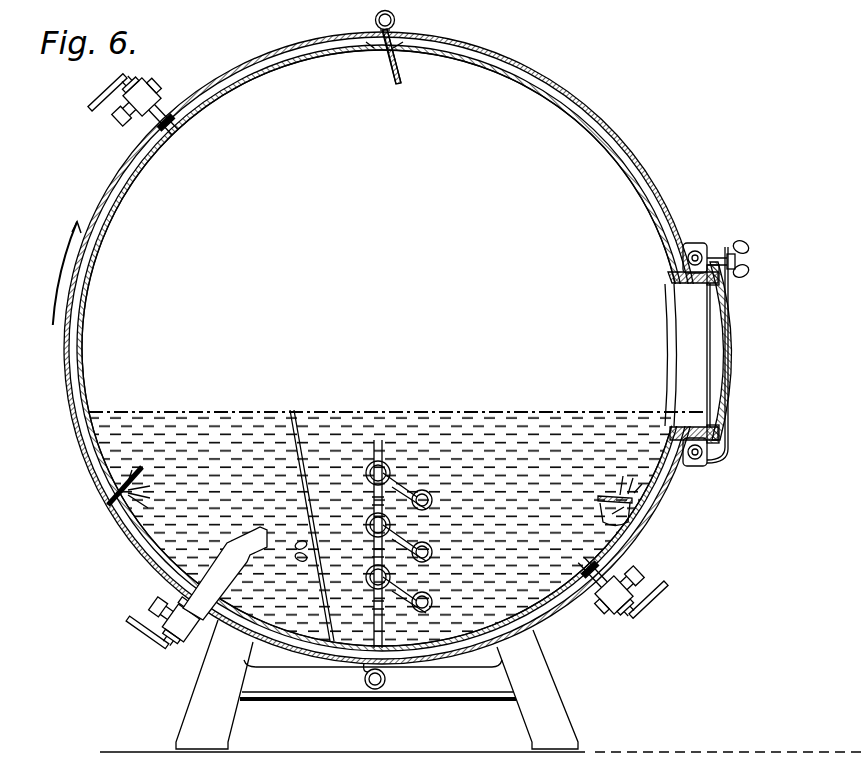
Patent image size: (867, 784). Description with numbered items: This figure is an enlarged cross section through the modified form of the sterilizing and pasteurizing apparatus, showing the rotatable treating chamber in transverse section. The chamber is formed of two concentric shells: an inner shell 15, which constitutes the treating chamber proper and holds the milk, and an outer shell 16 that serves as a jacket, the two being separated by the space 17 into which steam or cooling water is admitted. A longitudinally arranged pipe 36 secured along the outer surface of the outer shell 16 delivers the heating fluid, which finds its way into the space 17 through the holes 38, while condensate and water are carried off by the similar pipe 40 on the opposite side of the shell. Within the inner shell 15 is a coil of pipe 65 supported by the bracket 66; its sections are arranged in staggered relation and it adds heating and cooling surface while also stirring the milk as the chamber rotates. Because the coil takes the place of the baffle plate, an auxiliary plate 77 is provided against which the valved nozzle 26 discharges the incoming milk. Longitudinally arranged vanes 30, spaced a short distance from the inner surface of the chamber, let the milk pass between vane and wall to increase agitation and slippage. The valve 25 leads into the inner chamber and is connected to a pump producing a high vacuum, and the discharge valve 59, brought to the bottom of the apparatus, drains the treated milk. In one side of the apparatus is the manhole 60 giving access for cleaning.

The inner shell 15 is at (612, 160).
The outer shell 16 is at (627, 160).
The space 17 is at (633, 180).
The valve 25 is at (612, 604).
The valved nozzle 26 is at (187, 632).
The vanes 30 is at (401, 78).
The pipe 36 is at (395, 18).
The holes 38 is at (380, 46).
The pipe 40 is at (386, 680).
The discharge valve 59 is at (150, 96).
The manhole 60 is at (730, 355).
The coil of pipe 65 is at (404, 483).
The bracket 66 is at (381, 441).
The auxiliary plate 77 is at (300, 418).